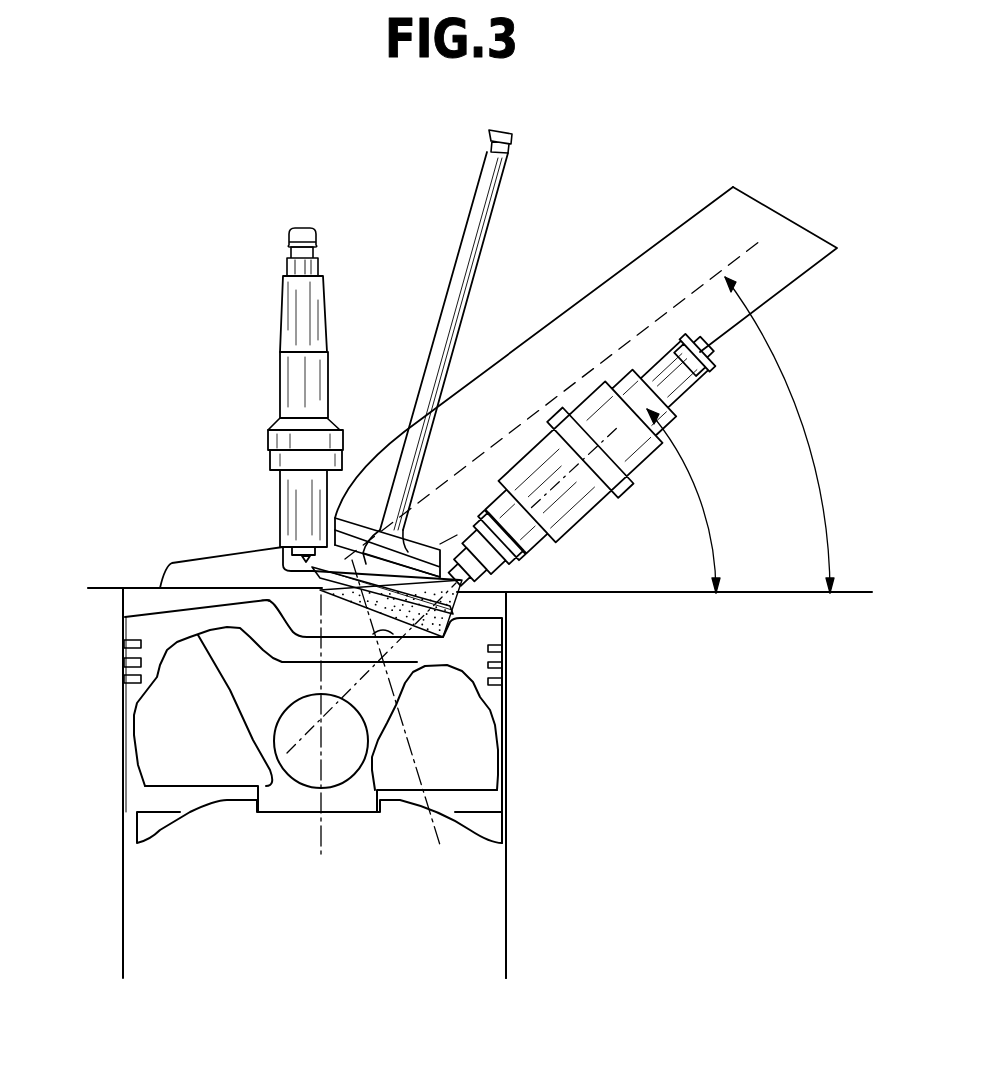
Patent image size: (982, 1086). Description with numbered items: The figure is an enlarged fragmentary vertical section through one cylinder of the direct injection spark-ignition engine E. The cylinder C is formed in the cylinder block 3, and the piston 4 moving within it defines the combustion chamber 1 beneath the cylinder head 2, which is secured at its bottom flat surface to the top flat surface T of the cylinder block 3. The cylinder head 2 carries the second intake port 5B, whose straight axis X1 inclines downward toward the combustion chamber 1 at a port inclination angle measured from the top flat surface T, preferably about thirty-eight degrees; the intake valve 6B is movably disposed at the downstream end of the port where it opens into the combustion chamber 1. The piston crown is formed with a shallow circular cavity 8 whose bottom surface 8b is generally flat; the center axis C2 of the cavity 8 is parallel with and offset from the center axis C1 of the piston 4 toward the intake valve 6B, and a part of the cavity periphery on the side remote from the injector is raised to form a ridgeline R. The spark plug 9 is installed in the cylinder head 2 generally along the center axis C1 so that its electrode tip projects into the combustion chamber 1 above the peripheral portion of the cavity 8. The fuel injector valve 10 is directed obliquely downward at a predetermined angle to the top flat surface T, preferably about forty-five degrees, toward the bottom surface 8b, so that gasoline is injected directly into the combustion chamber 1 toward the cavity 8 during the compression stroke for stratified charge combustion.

The engine E is at (112, 428).
The combustion chamber 1 is at (287, 612).
The cylinder head 2 is at (212, 540).
The cylinder block 3 is at (112, 645).
The piston 4 is at (477, 633).
The second intake port 5B is at (683, 242).
The intake valve 6B is at (366, 548).
The cavity 8 is at (290, 630).
The bottom surface 8b is at (392, 633).
The spark plug 9 is at (292, 312).
The fuel injector valve 10 is at (585, 516).
The ridgeline R is at (267, 600).
The top flat surface T is at (638, 592).
The cylinder C is at (506, 937).
The center axis C1 is at (320, 838).
The center axis C2 is at (402, 716).
The axis X1 is at (618, 351).